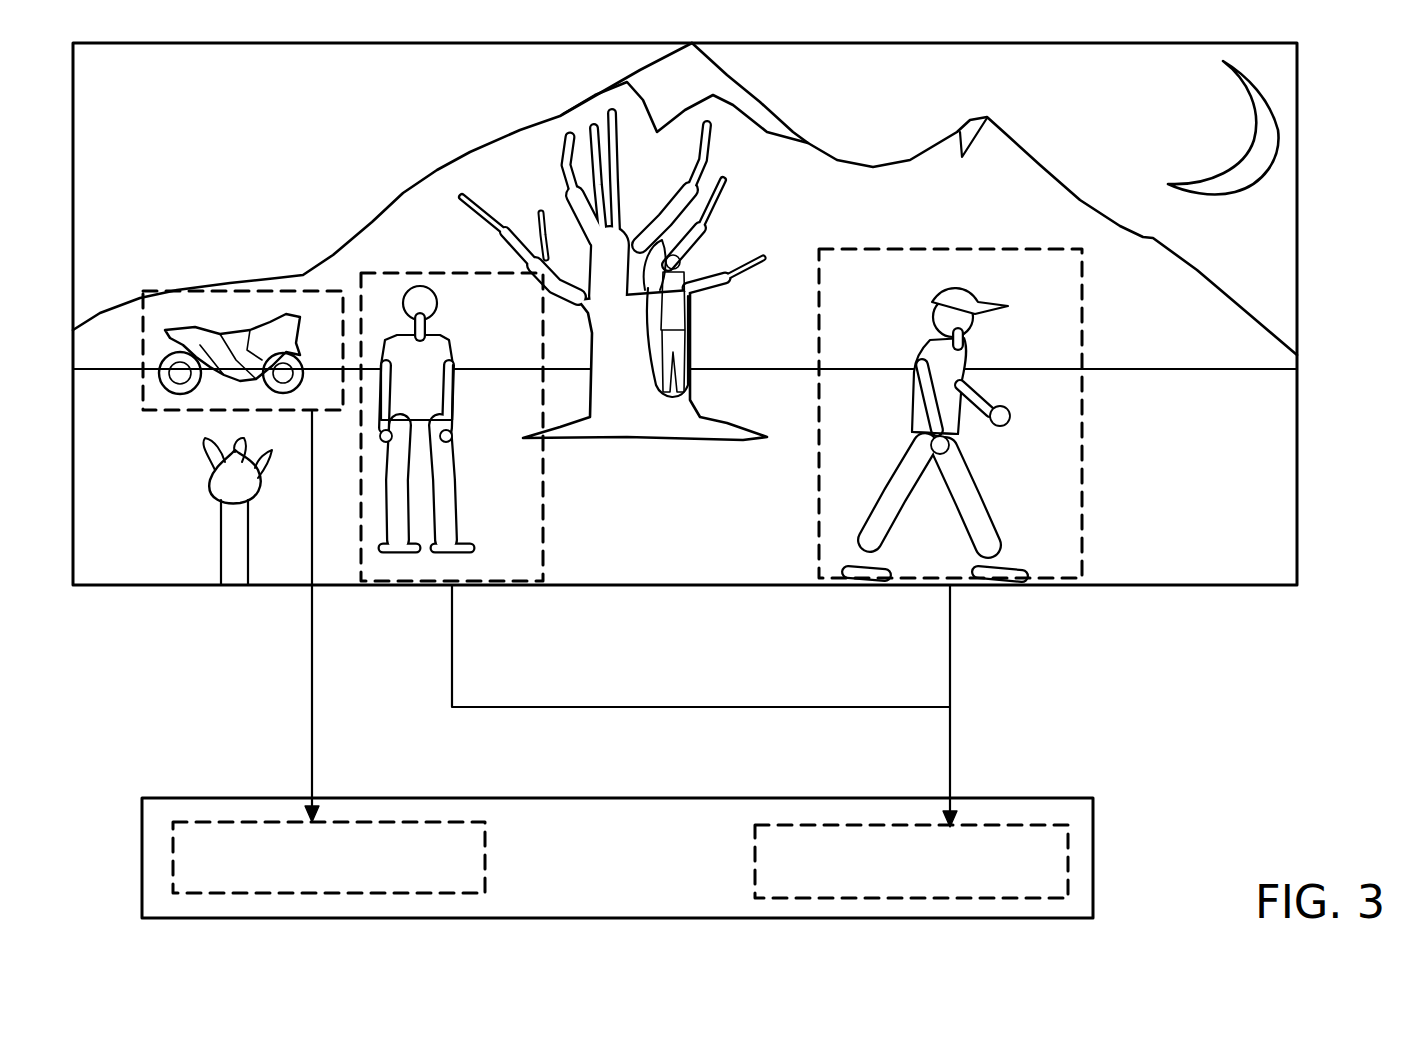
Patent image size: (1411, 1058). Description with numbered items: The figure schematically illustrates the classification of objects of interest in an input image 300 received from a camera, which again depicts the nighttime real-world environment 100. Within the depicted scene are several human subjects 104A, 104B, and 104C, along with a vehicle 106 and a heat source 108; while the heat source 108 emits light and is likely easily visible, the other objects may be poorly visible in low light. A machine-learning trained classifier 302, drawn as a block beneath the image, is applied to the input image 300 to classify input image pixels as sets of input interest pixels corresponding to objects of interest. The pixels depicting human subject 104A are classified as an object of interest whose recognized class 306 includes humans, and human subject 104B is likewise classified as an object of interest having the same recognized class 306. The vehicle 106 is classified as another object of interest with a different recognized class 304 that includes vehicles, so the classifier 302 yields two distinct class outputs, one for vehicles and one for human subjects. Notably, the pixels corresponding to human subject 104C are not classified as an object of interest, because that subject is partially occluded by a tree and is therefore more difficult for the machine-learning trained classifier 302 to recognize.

The input image 300 is at (72, 66).
The real-world environment 100 is at (169, 96).
The human subject 104A is at (975, 290).
The human subject 104B is at (455, 445).
The human subject 104C is at (688, 322).
The vehicle 106 is at (290, 323).
The heat source 108 is at (205, 480).
The machine-learning trained classifier 302 is at (732, 830).
The recognized class 304 is at (486, 888).
The recognized class 306 is at (754, 888).